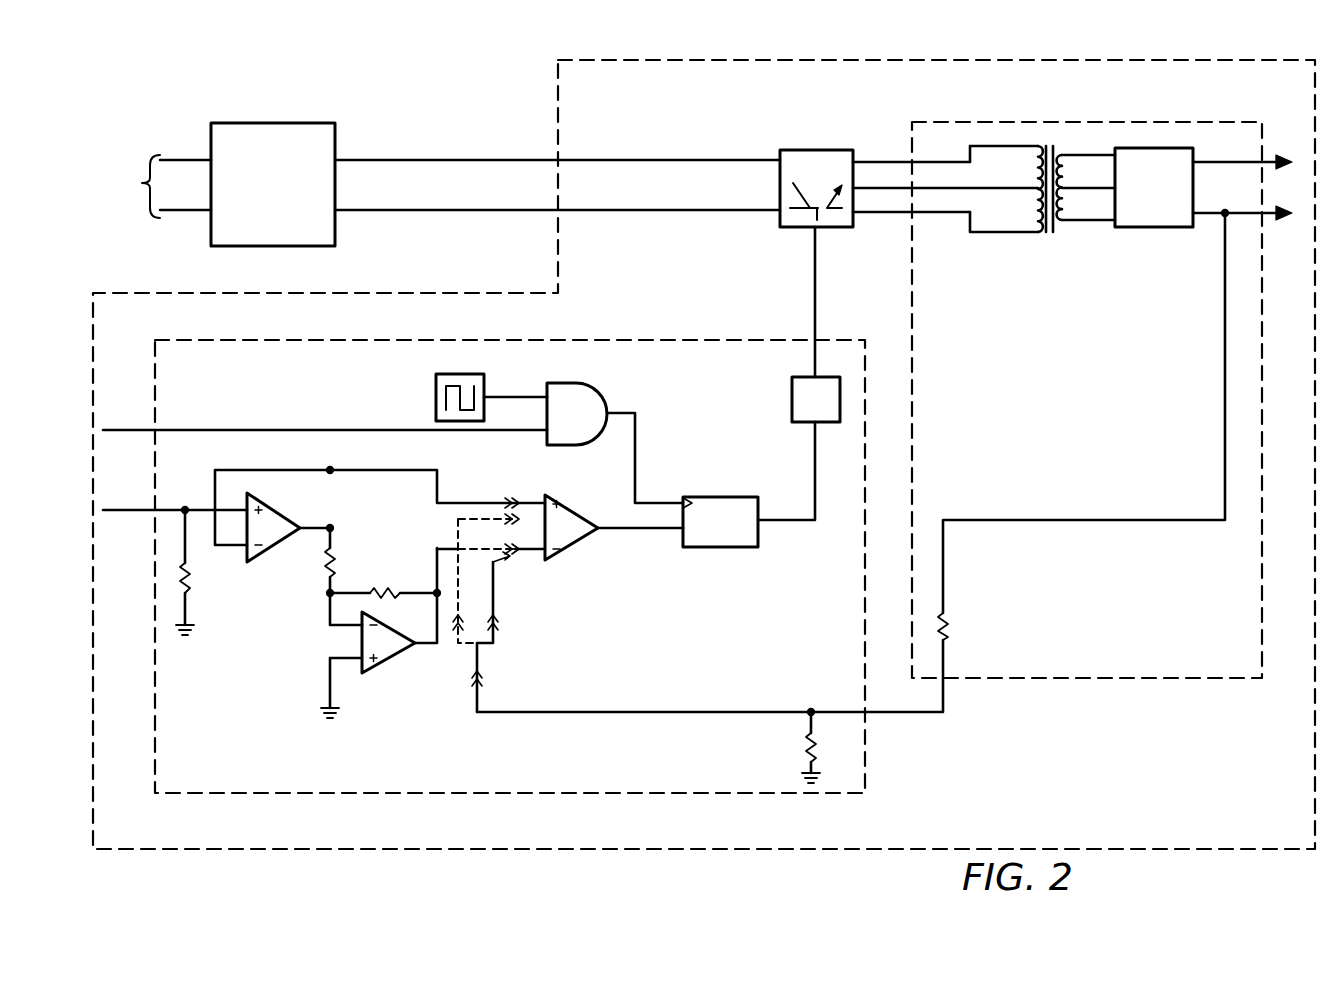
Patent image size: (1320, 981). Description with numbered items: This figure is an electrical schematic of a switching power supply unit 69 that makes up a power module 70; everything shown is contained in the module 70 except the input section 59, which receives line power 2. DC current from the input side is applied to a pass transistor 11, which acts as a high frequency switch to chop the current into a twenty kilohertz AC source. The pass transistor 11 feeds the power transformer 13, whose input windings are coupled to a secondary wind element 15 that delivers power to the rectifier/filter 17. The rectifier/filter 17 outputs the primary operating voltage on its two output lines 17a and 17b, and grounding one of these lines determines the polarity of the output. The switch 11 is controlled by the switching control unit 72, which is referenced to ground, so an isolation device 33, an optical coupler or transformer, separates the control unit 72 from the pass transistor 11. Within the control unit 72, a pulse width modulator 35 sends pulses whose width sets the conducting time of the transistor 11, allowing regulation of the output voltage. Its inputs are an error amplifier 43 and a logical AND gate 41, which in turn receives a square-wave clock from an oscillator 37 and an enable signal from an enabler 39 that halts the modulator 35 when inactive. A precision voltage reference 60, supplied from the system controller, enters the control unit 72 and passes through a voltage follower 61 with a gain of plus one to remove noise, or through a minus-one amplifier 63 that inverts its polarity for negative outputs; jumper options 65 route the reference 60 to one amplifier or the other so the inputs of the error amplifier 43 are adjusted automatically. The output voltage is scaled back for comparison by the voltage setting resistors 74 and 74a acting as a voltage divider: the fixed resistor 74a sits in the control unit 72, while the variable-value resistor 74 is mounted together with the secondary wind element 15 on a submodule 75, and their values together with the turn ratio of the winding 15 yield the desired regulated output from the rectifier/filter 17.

The line power 2 is at (165, 186).
The pass transistor 11 is at (842, 227).
The power transformer 13 is at (998, 232).
The secondary winding 15 is at (1098, 222).
The rectifier/filter 17 is at (1173, 228).
The output line 17a is at (1234, 162).
The output line 17b is at (1248, 215).
The isolation device 33 is at (792, 400).
The pulse width modulator 35 is at (727, 497).
The oscillator 37 is at (436, 395).
The enabler 39 is at (505, 432).
The logical AND gate 41 is at (602, 396).
The error amplifier 43 is at (573, 545).
The input section 59 is at (290, 123).
The precision voltage reference 60 is at (147, 510).
The voltage follower 61 is at (285, 548).
The minus-one amplifier 63 is at (395, 660).
The jumper options 65 is at (512, 520).
The switching power supply unit 69 is at (697, 58).
The power module 70 is at (444, 82).
The switching control unit 72 is at (704, 340).
The voltage setting resistor 74 is at (948, 630).
The voltage setting resistor 74a is at (808, 745).
The submodule 75 is at (1155, 680).